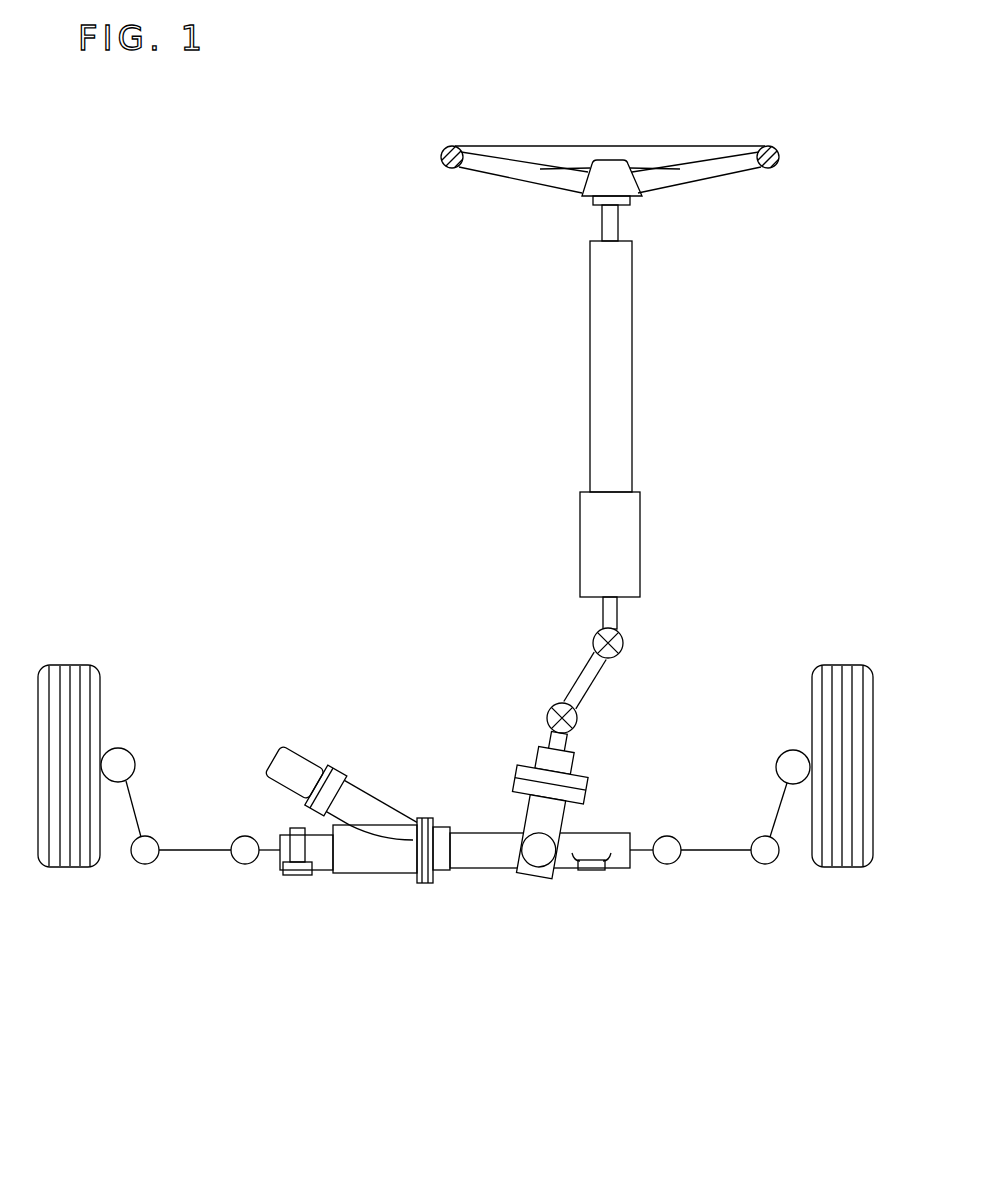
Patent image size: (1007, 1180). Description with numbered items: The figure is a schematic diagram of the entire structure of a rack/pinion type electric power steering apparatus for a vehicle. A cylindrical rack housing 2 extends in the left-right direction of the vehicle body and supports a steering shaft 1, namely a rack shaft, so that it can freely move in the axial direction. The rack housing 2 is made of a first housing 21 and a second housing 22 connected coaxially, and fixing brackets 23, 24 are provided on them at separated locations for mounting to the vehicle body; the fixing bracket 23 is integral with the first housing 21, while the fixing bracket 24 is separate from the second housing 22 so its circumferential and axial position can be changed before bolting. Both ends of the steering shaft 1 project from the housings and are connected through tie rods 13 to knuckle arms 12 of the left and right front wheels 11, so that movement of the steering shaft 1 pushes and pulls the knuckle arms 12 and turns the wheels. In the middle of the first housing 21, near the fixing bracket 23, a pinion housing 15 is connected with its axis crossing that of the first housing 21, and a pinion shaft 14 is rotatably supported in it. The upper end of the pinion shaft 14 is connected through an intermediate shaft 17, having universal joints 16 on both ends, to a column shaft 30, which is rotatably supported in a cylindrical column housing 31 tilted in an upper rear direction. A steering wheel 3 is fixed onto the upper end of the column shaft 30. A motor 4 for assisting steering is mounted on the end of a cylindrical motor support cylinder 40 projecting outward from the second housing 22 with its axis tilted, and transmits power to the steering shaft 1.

The steering shaft 1 is at (270, 852).
The rack housing 2 is at (455, 910).
The steering wheel 3 is at (520, 147).
The motor 4 is at (297, 763).
The front wheel 11 is at (63, 868).
The knuckle arm 12 is at (130, 815).
The tie rod 13 is at (198, 852).
The pinion shaft 14 is at (568, 743).
The pinion housing 15 is at (560, 817).
The universal joint 16 is at (630, 637).
The intermediate shaft 17 is at (578, 677).
The first housing 21 is at (442, 871).
The second housing 22 is at (388, 866).
The fixing bracket 23 is at (593, 870).
The fixing bracket 24 is at (297, 877).
The column shaft 30 is at (603, 218).
The column housing 31 is at (632, 290).
The motor support cylinder 40 is at (368, 802).